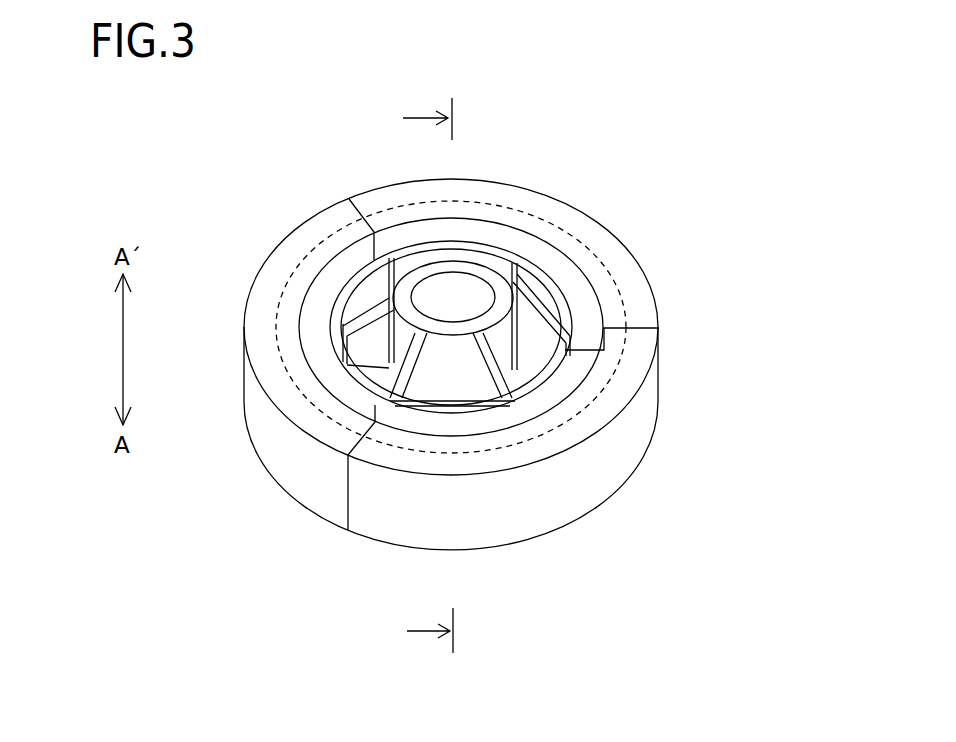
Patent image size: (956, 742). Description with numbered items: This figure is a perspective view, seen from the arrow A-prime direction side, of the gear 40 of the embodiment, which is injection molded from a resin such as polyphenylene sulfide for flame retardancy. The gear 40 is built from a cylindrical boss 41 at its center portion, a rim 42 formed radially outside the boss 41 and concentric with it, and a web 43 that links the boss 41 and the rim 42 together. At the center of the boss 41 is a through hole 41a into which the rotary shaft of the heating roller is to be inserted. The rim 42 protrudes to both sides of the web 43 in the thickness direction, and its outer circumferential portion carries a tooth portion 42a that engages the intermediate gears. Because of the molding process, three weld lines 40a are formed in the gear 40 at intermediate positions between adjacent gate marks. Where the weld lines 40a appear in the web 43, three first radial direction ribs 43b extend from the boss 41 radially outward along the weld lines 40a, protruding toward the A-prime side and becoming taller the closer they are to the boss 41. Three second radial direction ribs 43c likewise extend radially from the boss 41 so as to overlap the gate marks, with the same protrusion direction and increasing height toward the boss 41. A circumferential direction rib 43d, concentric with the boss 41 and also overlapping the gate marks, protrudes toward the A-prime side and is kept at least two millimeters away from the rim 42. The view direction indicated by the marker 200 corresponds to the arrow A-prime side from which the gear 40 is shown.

The gear 40 is at (688, 167).
The weld lines 40a is at (350, 199).
The cylindrical boss 41 is at (447, 288).
The through hole 41a is at (423, 320).
The rim 42 is at (612, 288).
The tooth portion 42a is at (305, 470).
The web 43 is at (587, 368).
The first radial direction ribs 43b is at (517, 357).
The second radial direction ribs 43c is at (389, 358).
The circumferential direction rib 43d is at (550, 275).
The viewing direction 200 is at (416, 379).